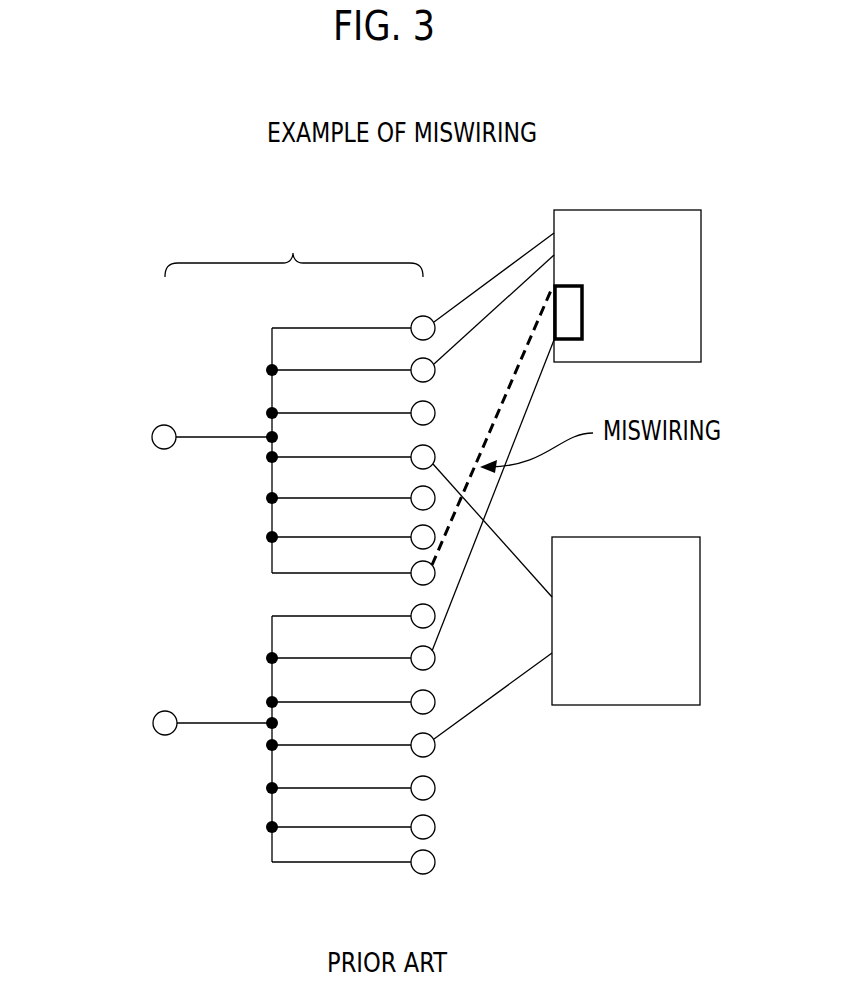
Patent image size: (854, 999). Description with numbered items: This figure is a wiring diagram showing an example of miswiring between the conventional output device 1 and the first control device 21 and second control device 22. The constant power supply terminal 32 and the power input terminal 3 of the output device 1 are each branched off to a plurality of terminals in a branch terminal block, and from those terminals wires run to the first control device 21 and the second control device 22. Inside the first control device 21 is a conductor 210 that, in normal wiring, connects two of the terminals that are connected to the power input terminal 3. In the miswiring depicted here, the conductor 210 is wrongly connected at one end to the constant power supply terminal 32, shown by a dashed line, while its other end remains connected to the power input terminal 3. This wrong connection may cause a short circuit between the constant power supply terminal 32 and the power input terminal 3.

The output device 1 is at (293, 263).
The first control device 21 is at (653, 210).
The conductor 210 is at (582, 322).
The second control device 22 is at (658, 537).
The constant power supply terminal 32 is at (158, 426).
The power input terminal 3 is at (160, 736).